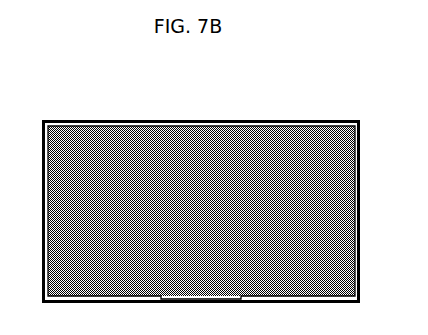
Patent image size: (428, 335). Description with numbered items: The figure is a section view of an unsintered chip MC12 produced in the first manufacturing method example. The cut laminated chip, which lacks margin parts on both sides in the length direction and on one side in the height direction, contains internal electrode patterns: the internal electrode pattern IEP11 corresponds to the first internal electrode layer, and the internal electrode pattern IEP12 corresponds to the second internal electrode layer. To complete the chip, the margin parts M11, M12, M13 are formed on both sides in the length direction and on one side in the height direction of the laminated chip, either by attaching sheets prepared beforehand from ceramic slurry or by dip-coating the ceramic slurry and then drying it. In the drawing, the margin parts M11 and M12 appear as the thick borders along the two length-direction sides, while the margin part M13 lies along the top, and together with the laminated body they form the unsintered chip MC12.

The margin part M11 is at (41, 172).
The margin part M12 is at (362, 171).
The margin part M13 is at (311, 118).
The unsintered chip MC12 is at (97, 118).
The internal electrode pattern IEP11 is at (170, 143).
The internal electrode pattern IEP12 is at (244, 140).